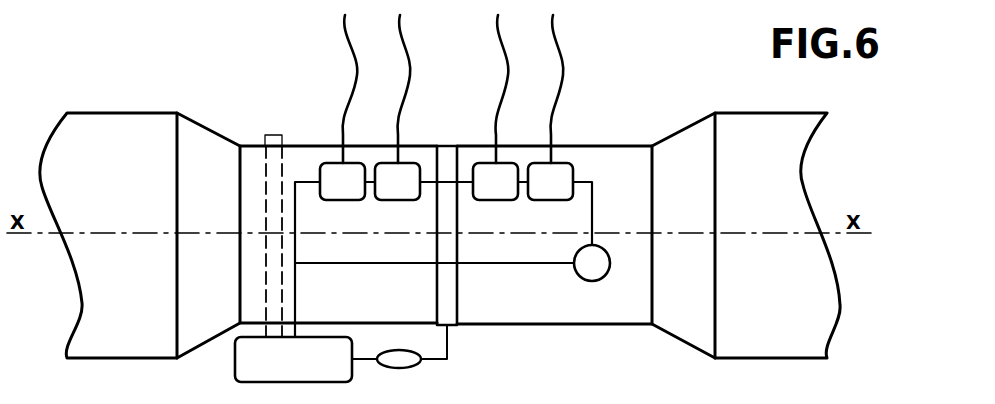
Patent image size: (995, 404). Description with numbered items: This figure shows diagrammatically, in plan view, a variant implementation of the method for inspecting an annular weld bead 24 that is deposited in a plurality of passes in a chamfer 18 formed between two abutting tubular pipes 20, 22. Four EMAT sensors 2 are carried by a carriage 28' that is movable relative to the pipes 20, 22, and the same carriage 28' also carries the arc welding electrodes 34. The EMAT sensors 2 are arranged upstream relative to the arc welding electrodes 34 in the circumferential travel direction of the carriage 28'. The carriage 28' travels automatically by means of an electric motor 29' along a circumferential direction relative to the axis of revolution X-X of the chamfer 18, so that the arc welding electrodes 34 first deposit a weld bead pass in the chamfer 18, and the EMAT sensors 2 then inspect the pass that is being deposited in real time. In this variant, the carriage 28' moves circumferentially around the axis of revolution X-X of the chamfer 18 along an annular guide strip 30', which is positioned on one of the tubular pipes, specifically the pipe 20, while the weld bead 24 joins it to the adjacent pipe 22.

The EMAT sensors 2 is at (446, 107).
The chamfer 18 is at (440, 146).
The tubular pipe 20 is at (338, 241).
The tubular pipe 22 is at (558, 305).
The annular weld bead 24 is at (444, 305).
The carriage 28' is at (452, 240).
The electric motor 29' is at (293, 359).
The annular guide strip 30' is at (262, 218).
The arc welding electrodes 34 is at (400, 359).